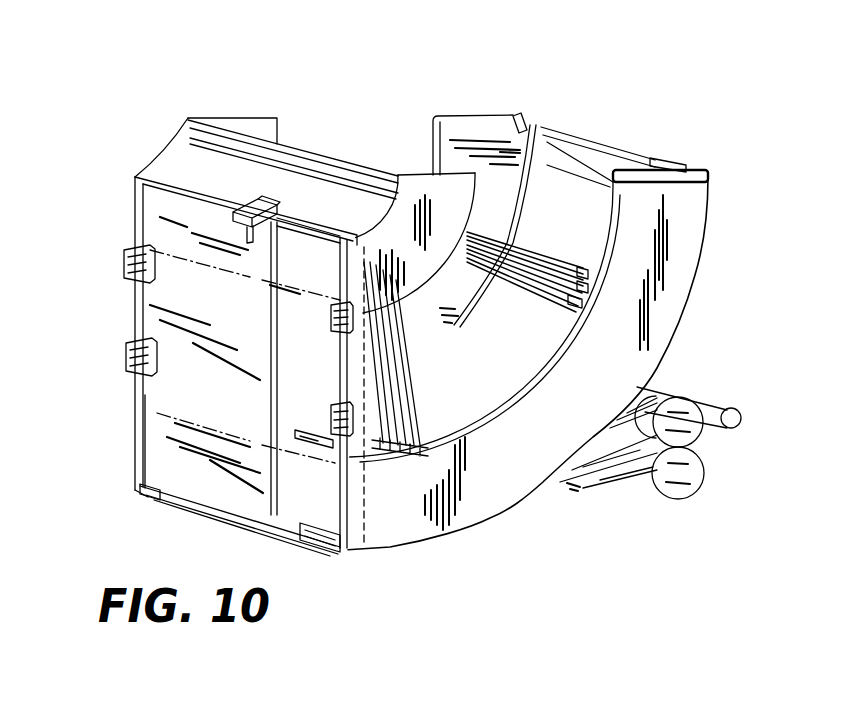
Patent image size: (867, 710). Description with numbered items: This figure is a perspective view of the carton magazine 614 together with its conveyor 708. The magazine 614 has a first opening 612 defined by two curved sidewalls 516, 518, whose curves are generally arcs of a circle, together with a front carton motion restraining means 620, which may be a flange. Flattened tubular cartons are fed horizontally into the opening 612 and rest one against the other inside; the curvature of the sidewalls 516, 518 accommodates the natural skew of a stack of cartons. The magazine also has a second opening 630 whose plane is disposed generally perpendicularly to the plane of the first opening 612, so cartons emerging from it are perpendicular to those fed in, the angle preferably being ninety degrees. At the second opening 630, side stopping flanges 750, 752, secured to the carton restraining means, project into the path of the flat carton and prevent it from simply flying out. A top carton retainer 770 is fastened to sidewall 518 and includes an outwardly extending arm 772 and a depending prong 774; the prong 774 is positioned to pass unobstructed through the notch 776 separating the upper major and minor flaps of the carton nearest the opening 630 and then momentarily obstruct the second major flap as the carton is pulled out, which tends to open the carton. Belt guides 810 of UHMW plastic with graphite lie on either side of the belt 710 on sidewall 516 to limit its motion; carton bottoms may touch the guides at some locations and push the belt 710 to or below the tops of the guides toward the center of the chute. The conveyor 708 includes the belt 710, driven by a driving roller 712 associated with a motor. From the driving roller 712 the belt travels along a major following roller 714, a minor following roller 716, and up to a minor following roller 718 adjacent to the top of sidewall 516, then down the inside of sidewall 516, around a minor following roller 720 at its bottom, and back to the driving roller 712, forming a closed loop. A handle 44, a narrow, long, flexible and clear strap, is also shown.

The handle 44 is at (332, 455).
The sidewall 516 is at (427, 542).
The sidewall 518 is at (187, 139).
The opening 612 is at (432, 104).
The magazine 614 is at (539, 525).
The front carton motion restraining means 620 is at (417, 176).
The second opening 630 is at (122, 468).
The conveyor 708 is at (697, 378).
The conveyor belt 710 is at (571, 141).
The driving roller 712 is at (673, 498).
The major following roller 714 is at (694, 431).
The minor following roller 716 is at (752, 402).
The minor following roller 718 is at (700, 168).
The minor following roller 720 is at (318, 546).
The side stopping flange 750 is at (342, 335).
The side stopping flange 752 is at (127, 345).
The top carton retainer 770 is at (267, 213).
The outwardly extending arm 772 is at (260, 198).
The depending prong 774 is at (245, 229).
The notch 776 is at (281, 212).
The belt guides 810 is at (153, 493).